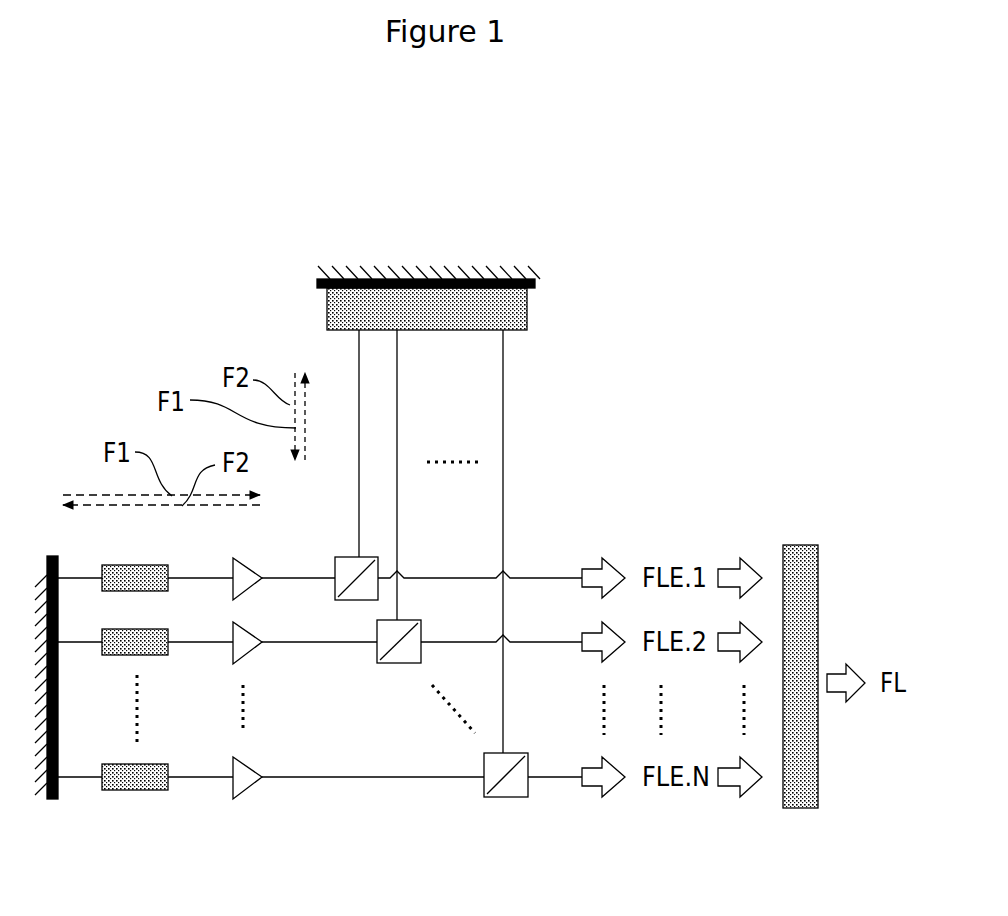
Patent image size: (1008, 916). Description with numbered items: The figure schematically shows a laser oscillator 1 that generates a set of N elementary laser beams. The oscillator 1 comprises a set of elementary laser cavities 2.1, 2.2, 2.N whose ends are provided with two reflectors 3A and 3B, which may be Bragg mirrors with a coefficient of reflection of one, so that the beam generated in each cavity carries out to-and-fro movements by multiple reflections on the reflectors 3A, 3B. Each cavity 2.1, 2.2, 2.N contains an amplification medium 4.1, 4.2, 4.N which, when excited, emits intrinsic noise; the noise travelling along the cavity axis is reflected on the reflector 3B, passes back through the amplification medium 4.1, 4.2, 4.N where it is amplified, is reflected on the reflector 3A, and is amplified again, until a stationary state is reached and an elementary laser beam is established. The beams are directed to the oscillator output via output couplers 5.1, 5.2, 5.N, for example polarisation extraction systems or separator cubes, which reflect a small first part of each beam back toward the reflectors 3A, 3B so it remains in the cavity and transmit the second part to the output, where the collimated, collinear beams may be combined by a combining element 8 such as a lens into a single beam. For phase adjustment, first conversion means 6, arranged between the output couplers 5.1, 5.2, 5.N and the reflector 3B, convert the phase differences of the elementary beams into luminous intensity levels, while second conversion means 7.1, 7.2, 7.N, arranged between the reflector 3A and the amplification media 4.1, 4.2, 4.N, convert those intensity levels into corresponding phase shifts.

The laser oscillator 1 is at (92, 272).
The elementary laser cavity 2.1 is at (352, 374).
The elementary laser cavity 2.2 is at (402, 393).
The elementary laser cavity 2.N is at (508, 393).
The reflector 3A is at (58, 800).
The reflector 3B is at (320, 282).
The amplification medium 4.1 is at (255, 590).
The amplification medium 4.2 is at (255, 654).
The amplification medium 4.N is at (255, 789).
The output coupler 5.1 is at (338, 566).
The output coupler 5.2 is at (418, 628).
The output coupler 5.N is at (516, 796).
The first conversion means 6 is at (527, 322).
The second conversion means 7.1 is at (150, 588).
The second conversion means 7.2 is at (150, 652).
The second conversion means 7.N is at (150, 787).
The combining element 8 is at (805, 550).